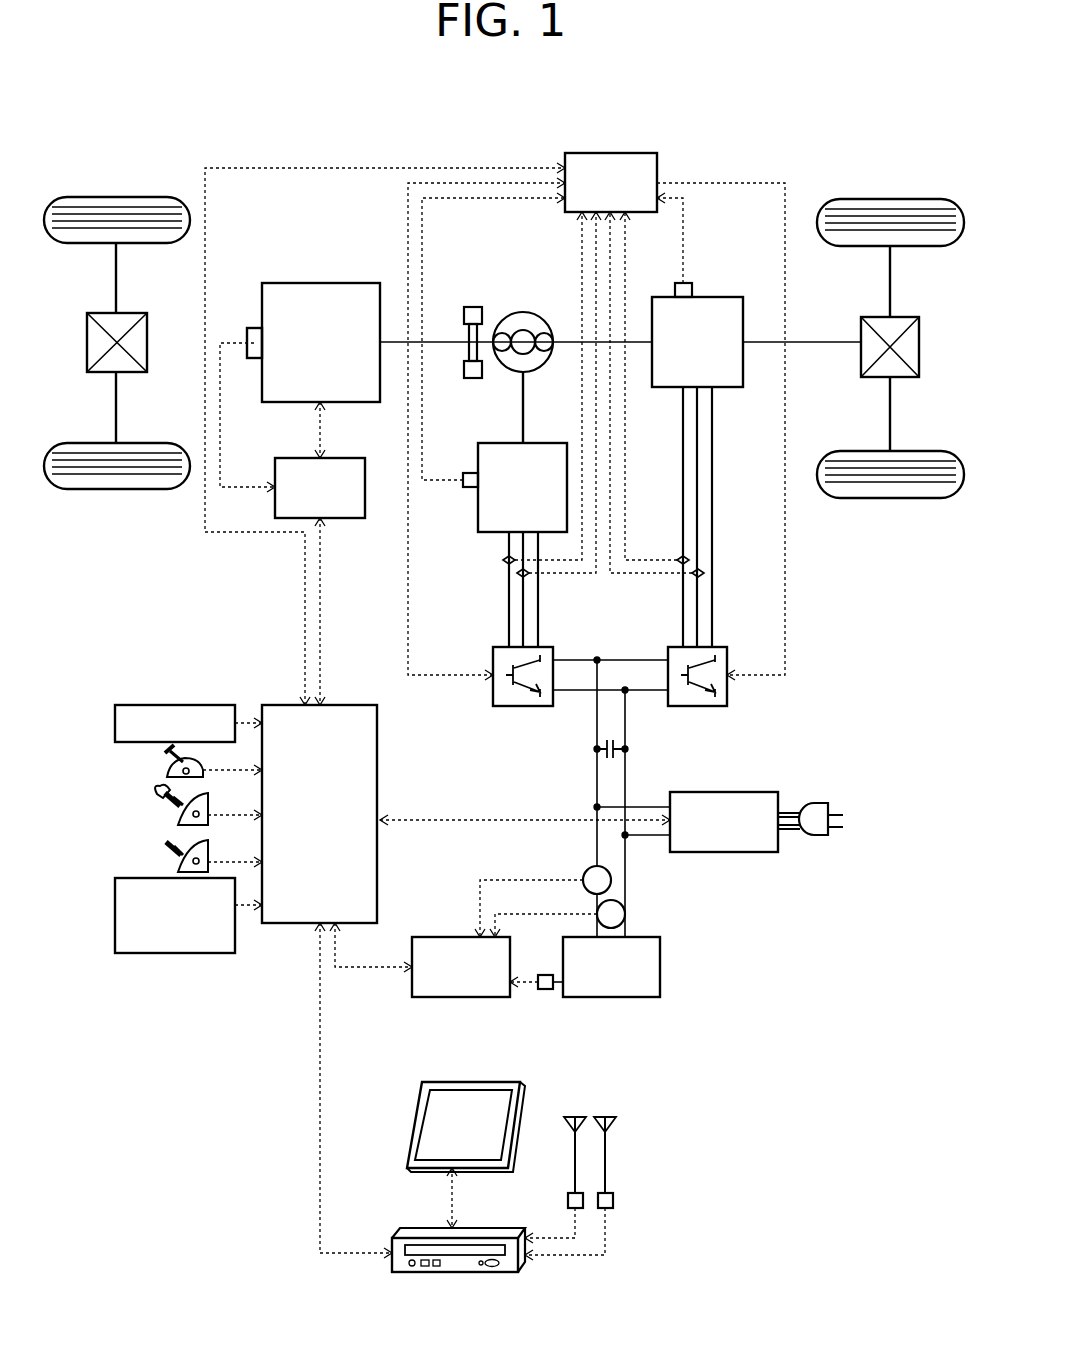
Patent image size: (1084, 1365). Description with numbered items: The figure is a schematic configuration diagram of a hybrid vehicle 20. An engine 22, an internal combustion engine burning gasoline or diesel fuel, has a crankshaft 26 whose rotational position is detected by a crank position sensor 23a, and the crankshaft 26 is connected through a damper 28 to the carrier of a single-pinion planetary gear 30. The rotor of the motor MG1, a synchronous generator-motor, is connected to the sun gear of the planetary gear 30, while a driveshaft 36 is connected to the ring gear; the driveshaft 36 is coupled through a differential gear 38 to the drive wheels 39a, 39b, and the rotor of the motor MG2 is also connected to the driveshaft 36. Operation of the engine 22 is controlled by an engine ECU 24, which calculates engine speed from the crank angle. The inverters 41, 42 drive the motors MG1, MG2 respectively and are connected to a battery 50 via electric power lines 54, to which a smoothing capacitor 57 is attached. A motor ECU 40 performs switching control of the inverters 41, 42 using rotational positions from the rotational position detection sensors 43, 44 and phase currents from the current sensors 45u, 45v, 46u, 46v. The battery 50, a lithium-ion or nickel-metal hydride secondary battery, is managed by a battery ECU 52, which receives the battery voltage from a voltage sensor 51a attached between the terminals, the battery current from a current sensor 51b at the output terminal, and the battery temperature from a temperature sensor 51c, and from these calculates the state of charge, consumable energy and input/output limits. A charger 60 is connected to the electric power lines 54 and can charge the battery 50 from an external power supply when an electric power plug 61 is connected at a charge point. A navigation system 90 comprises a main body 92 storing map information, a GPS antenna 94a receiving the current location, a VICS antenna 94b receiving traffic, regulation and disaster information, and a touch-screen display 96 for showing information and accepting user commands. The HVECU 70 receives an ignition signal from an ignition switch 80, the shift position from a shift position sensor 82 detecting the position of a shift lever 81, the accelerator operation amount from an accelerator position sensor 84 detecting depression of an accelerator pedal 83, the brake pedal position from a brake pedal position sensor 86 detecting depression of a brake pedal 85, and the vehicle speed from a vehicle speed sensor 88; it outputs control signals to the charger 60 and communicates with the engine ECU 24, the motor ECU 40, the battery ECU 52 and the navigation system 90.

The hybrid vehicle 20 is at (731, 114).
The engine 22 is at (349, 283).
The crank position sensor 23a is at (254, 328).
The engine ECU 24 is at (349, 458).
The crankshaft 26 is at (443, 340).
The damper 28 is at (472, 307).
The planetary gear 30 is at (524, 312).
The driveshaft 36 is at (832, 342).
The differential gear 38 is at (902, 317).
The drive wheel 39a is at (889, 199).
The drive wheel 39b is at (889, 498).
The motor ECU 40 is at (641, 153).
The inverter 41 is at (546, 647).
The inverter 42 is at (722, 647).
The rotational position detection sensor 43 is at (471, 488).
The rotational position detection sensor 44 is at (686, 282).
The current sensor 45u is at (503, 560).
The current sensor 45v is at (517, 573).
The current sensor 46u is at (689, 560).
The current sensor 46v is at (704, 573).
The battery 50 is at (662, 962).
The voltage sensor 51a is at (626, 913).
The current sensor 51b is at (612, 878).
The temperature sensor 51c is at (546, 990).
The battery ECU 52 is at (452, 937).
The electric power line 54 is at (626, 720).
The smoothing capacitor 57 is at (618, 745).
The charger 60 is at (727, 792).
The electric power plug 61 is at (821, 806).
The HVECU 70 is at (350, 705).
The ignition switch 80 is at (115, 722).
The shift lever 81 is at (168, 752).
The shift position sensor 82 is at (186, 770).
The accelerator pedal 83 is at (160, 800).
The accelerator position sensor 84 is at (182, 816).
The brake pedal 85 is at (170, 848).
The brake pedal position sensor 86 is at (183, 862).
The vehicle speed sensor 88 is at (115, 903).
The navigation system 90 is at (382, 1102).
The main body 92 is at (455, 1272).
The GPS antenna 94a is at (568, 1200).
The VICS antenna 94b is at (613, 1200).
The touch-screen display 96 is at (463, 1082).
The motor MG1 is at (497, 443).
The motor MG2 is at (730, 297).